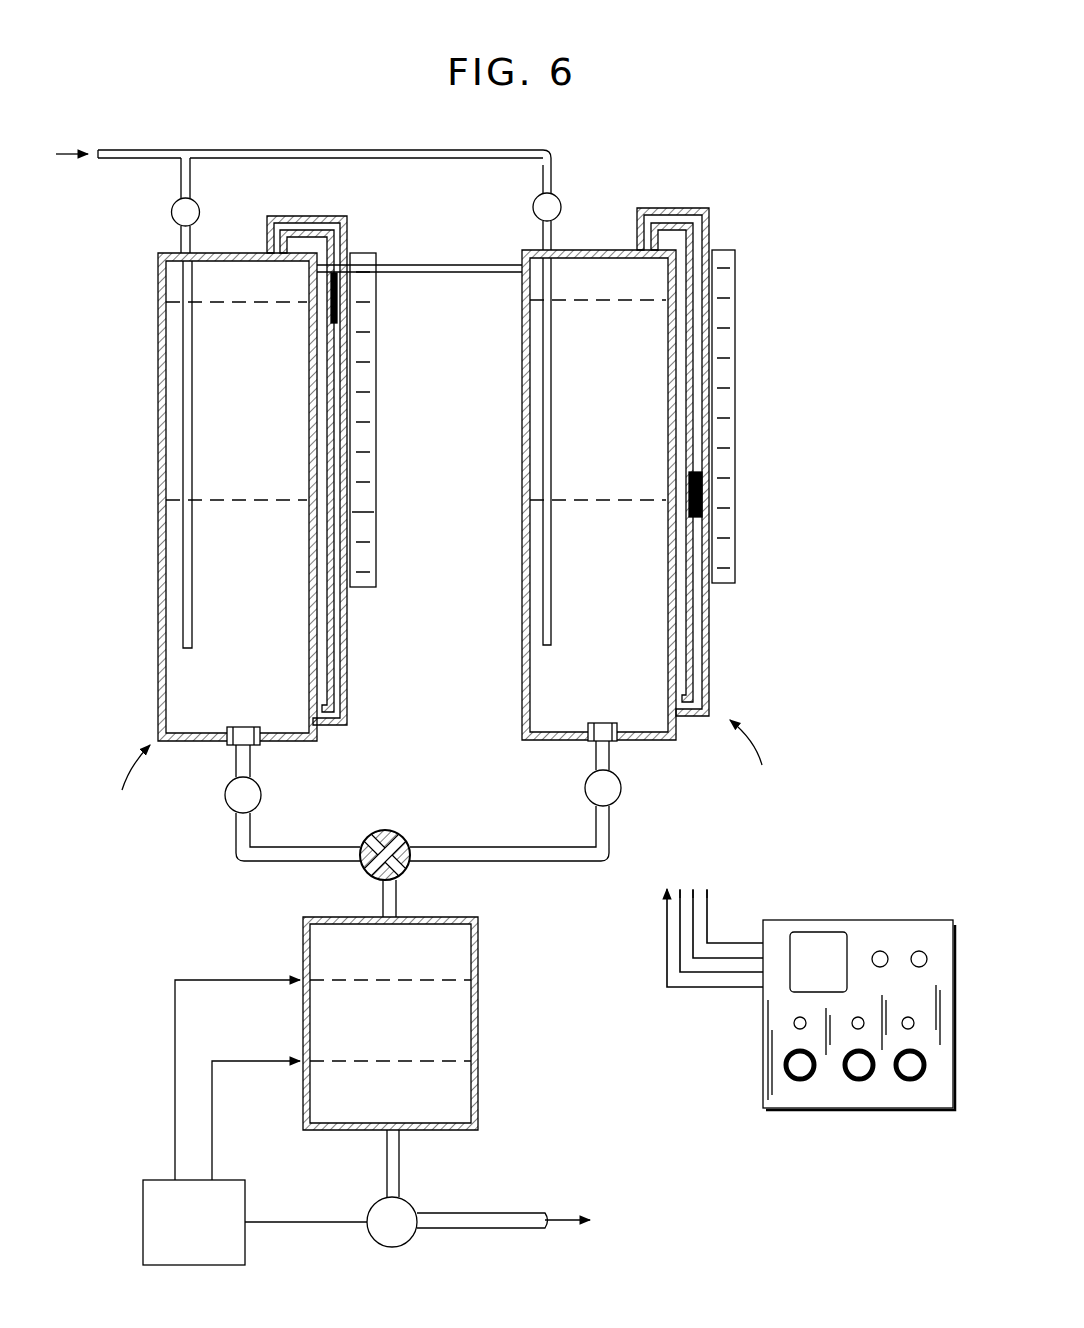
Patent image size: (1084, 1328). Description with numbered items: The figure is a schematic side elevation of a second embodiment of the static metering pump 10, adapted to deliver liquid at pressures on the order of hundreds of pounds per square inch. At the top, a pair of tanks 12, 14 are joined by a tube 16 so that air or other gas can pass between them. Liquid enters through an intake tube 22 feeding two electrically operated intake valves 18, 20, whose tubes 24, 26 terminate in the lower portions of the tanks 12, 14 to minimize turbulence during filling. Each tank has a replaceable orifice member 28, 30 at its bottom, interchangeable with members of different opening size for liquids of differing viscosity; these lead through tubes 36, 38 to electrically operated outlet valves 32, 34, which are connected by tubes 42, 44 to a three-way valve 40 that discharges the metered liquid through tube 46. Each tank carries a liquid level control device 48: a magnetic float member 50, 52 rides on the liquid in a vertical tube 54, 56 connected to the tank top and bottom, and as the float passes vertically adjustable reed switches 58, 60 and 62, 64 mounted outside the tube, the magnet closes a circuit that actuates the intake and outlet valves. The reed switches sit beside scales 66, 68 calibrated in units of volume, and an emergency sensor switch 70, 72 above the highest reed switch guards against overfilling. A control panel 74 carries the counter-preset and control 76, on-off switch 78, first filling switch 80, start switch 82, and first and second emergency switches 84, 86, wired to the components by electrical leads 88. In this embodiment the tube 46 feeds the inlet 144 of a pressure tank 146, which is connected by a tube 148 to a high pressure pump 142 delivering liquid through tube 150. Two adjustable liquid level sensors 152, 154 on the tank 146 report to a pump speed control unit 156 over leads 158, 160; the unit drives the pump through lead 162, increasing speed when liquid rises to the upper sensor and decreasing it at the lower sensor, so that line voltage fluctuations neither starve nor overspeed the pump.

The static metering pump 10 is at (441, 766).
The tank 12 is at (160, 632).
The tank 14 is at (524, 620).
The tube 16 is at (472, 273).
The intake valve 18 is at (171, 212).
The intake valve 20 is at (561, 203).
The intake tube 22 is at (390, 150).
The tube 24 is at (183, 440).
The tube 26 is at (543, 432).
The replaceable orifice member 28 is at (240, 727).
The replaceable orifice member 30 is at (600, 723).
The outlet valve 32 is at (225, 795).
The outlet valve 34 is at (621, 790).
The tube 36 is at (234, 766).
The tube 38 is at (594, 761).
The three-way valve 40 is at (393, 832).
The tube 42 is at (283, 862).
The tube 44 is at (545, 862).
The tube 46 is at (397, 897).
The liquid level control device 48 is at (502, 436).
The magnetic float member 50 is at (320, 302).
The magnetic float member 52 is at (704, 500).
The vertical tube 54 is at (347, 668).
The vertical tube 56 is at (710, 661).
The reed switch 58 is at (331, 300).
The reed switch 60 is at (320, 498).
The reed switch 62 is at (682, 296).
The reed switch 64 is at (692, 470).
The scale 66 is at (377, 553).
The scale 68 is at (737, 558).
The emergency sensor switch 70 is at (303, 282).
The emergency sensor switch 72 is at (665, 277).
The control panel 74 is at (823, 1016).
The counter-preset and control 76 is at (790, 942).
The on-off switch 78 is at (795, 1072).
The first filling switch 80 is at (858, 1072).
The start switch 82 is at (911, 1072).
The first emergency switch 84 is at (888, 953).
The second emergency switch 86 is at (927, 960).
The electrical leads 88 is at (718, 989).
The high pressure pump 142 is at (393, 1248).
The inlet 144 is at (380, 916).
The pressure tank 146 is at (480, 1082).
The tube 148 is at (402, 1182).
The tube 150 is at (498, 1230).
The liquid level sensor 152 is at (300, 978).
The liquid level sensor 154 is at (298, 1064).
The pump speed control unit 156 is at (248, 1258).
The lead 158 is at (175, 1065).
The lead 160 is at (222, 1060).
The lead 162 is at (337, 1225).